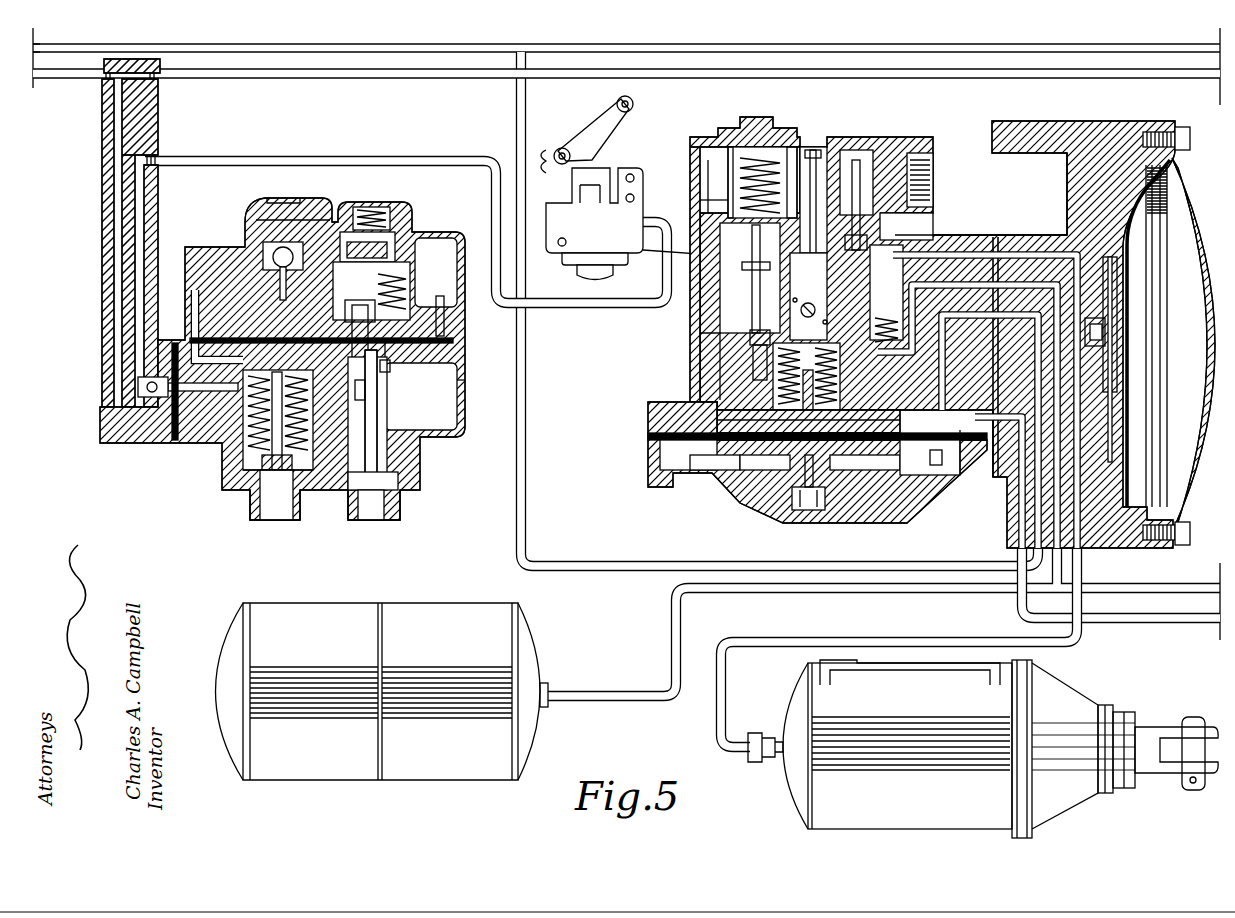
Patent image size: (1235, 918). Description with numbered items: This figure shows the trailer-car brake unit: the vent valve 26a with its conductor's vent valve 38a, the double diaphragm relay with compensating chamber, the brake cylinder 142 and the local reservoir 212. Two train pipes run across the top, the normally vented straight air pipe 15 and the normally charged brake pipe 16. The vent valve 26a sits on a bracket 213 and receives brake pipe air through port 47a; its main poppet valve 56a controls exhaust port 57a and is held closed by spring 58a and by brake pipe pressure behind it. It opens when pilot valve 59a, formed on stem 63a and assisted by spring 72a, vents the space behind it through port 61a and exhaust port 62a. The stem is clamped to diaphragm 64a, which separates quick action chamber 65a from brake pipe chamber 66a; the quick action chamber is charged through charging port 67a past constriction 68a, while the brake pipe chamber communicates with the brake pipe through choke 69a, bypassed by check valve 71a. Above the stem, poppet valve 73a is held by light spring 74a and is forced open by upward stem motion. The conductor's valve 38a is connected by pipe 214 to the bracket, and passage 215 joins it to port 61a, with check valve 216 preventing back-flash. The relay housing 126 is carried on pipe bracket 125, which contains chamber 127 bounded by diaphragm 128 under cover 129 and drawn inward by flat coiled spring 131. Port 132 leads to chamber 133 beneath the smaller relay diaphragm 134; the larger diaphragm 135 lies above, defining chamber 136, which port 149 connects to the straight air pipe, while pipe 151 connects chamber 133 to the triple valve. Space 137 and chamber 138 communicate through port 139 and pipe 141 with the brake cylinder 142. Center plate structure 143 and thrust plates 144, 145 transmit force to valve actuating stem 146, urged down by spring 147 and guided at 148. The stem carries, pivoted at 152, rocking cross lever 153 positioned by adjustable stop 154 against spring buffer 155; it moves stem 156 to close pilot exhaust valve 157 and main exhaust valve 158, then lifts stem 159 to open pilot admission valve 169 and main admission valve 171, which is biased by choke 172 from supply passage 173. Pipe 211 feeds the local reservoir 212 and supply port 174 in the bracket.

The straight air pipe 15 is at (215, 45).
The brake pipe 16 is at (57, 80).
The vent valve 26a is at (463, 318).
The conductor's vent valve 38a is at (592, 188).
The port 47a is at (176, 440).
The poppet valve 56a is at (255, 478).
The exhaust port 57a is at (276, 520).
The spring 58a is at (248, 455).
The pilot valve 59a is at (400, 480).
The port 61a is at (380, 418).
The exhaust port 62a is at (378, 520).
The stem 63a is at (380, 398).
The flexible diaphragm 64a is at (430, 348).
The quick action chamber 65a is at (458, 416).
The brake pipe chamber 66a is at (352, 312).
The charging port 67a is at (408, 300).
The constriction 68a is at (385, 378).
The choke 69a is at (262, 300).
The check valve 71a is at (290, 240).
The spring 72a is at (405, 290).
The poppet or check valve 73a is at (392, 240).
The light spring 74a is at (370, 210).
The pipe bracket 125 is at (1058, 122).
The housing 126 is at (965, 240).
The chamber 127 is at (1125, 205).
The flexible diaphragm 128 is at (1130, 250).
The cover 129 is at (1190, 190).
The flat coiled spring 131 is at (1120, 380).
The port 132 is at (990, 492).
The chamber 133 is at (805, 512).
The relay diaphragm 134 is at (740, 450).
The relay diaphragm 135 is at (705, 470).
The chamber 136 is at (720, 470).
The space 137 is at (730, 323).
The chamber 138 is at (725, 410).
The port 139 is at (975, 250).
The pipe 141 is at (897, 642).
The brake cylinder 142 is at (1075, 697).
The center plate structure 143 is at (765, 480).
The thrust plate 144 is at (910, 500).
The thrust plate 145 is at (860, 480).
The valve actuating stem 146 is at (808, 296).
The coil compression spring 147 is at (945, 332).
The guide 148 is at (812, 170).
The port 149 is at (950, 465).
The pipe 151 is at (1130, 624).
The pivot 152 is at (852, 240).
The rocking cross lever 153 is at (755, 300).
The adjustable stop 154 is at (750, 338).
The spring buffer 155 is at (878, 318).
The stem 156 is at (898, 238).
The pilot exhaust valve 157 is at (905, 223).
The main exhaust valve 158 is at (900, 215).
The stem 159 is at (672, 252).
The pilot admission valve 169 is at (716, 192).
The main admission valve 171 is at (728, 184).
The choke 172 is at (700, 158).
The main air supply passage 173 is at (700, 215).
The supply port 174 is at (1030, 283).
The pipe 211 is at (592, 690).
The local reservoir 212 is at (438, 605).
The bracket 213 is at (158, 101).
The pipe 214 is at (266, 161).
The passage 215 is at (144, 189).
The check valve 216 is at (138, 386).